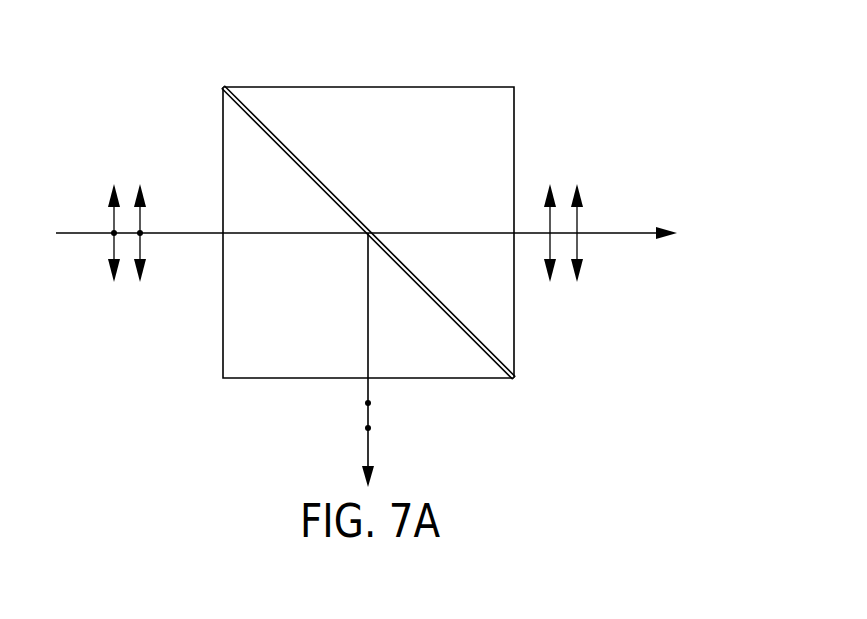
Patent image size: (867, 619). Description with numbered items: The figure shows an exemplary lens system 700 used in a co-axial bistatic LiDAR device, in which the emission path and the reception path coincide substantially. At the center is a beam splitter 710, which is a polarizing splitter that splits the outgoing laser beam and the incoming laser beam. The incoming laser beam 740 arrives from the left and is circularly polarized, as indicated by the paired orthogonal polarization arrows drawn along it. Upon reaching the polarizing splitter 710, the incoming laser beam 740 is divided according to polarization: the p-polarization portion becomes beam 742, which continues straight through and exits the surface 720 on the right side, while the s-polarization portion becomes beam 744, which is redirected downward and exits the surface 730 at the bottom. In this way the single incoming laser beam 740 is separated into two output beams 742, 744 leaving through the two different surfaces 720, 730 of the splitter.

The polarizing beam splitter assembly 700 is at (470, 228).
The beam splitter 710 is at (256, 114).
The surface 720 is at (514, 127).
The surface 730 is at (246, 380).
The incoming laser beam 740 is at (70, 232).
The beam 742 is at (625, 232).
The beam 744 is at (370, 447).